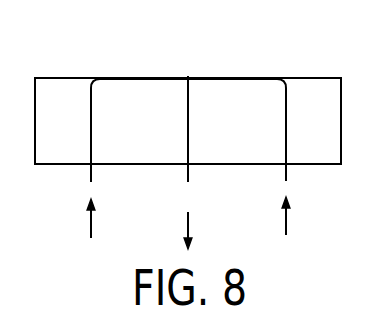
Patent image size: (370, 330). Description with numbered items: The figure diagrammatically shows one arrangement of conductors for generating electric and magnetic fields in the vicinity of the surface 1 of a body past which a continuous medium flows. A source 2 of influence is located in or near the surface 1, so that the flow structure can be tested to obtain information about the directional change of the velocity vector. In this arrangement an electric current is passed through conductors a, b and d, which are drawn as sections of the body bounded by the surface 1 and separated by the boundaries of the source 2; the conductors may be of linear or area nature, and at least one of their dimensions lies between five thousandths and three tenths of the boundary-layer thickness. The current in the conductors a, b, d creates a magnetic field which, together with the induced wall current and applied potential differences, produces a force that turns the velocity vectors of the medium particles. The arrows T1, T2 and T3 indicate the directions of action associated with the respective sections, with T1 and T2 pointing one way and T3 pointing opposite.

The surface 1 is at (80, 67).
The source of influence 2 is at (193, 66).
The conductor a is at (144, 69).
The conductor b is at (232, 69).
The conductor d is at (196, 121).
The force T1 is at (108, 216).
The force T2 is at (300, 214).
The force T3 is at (202, 221).